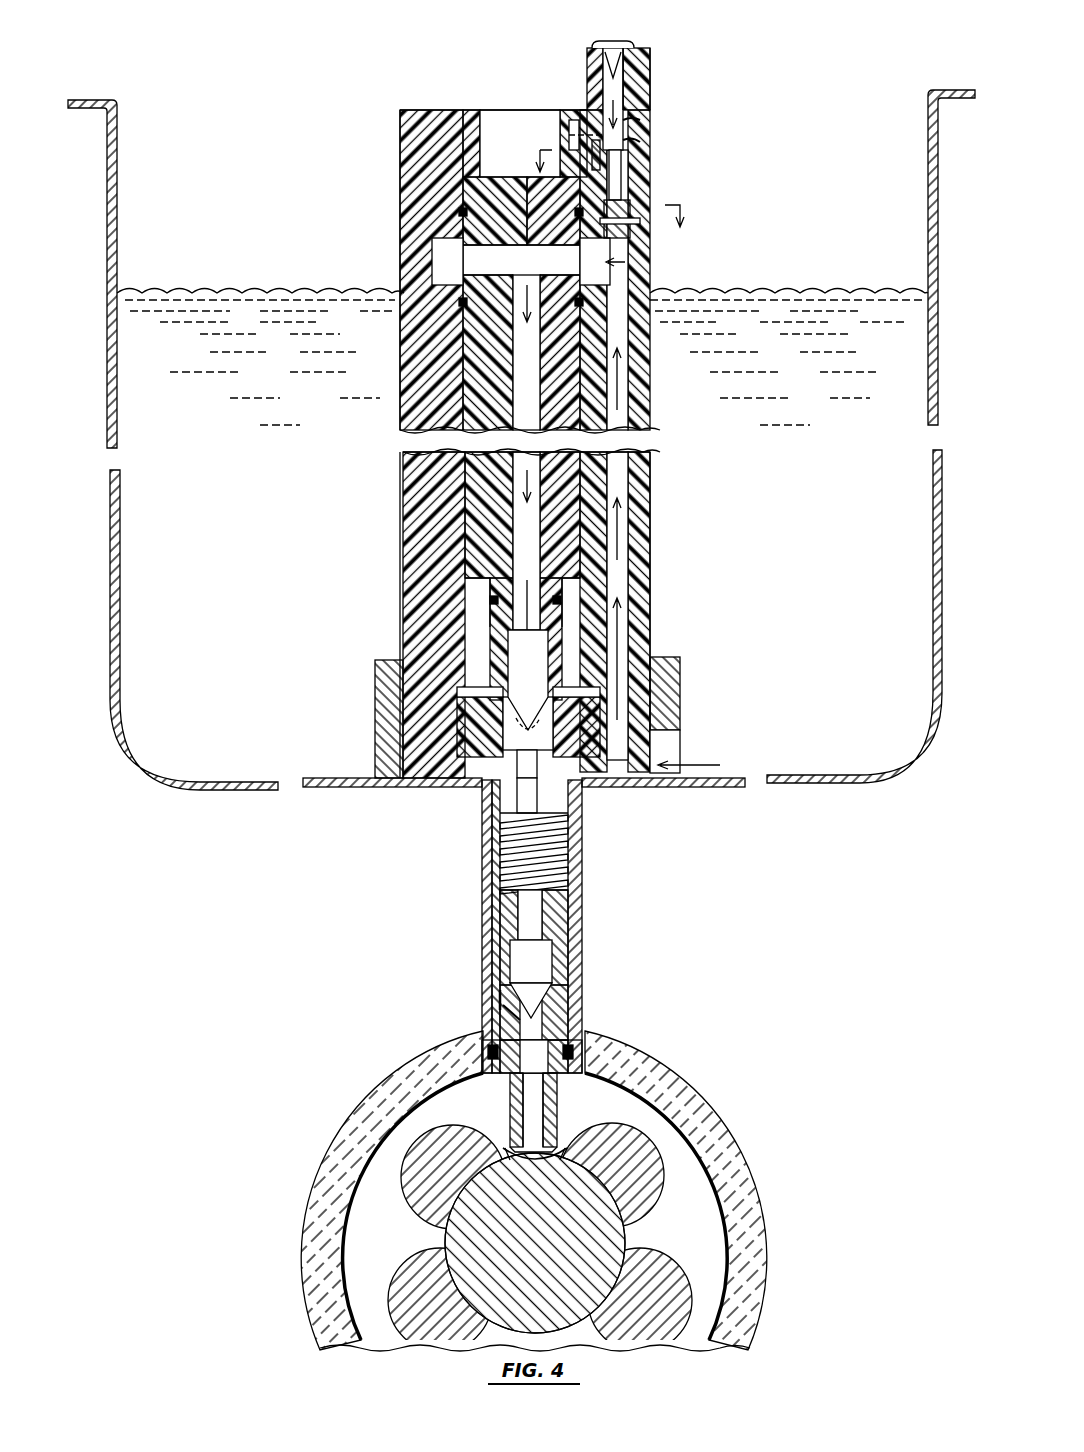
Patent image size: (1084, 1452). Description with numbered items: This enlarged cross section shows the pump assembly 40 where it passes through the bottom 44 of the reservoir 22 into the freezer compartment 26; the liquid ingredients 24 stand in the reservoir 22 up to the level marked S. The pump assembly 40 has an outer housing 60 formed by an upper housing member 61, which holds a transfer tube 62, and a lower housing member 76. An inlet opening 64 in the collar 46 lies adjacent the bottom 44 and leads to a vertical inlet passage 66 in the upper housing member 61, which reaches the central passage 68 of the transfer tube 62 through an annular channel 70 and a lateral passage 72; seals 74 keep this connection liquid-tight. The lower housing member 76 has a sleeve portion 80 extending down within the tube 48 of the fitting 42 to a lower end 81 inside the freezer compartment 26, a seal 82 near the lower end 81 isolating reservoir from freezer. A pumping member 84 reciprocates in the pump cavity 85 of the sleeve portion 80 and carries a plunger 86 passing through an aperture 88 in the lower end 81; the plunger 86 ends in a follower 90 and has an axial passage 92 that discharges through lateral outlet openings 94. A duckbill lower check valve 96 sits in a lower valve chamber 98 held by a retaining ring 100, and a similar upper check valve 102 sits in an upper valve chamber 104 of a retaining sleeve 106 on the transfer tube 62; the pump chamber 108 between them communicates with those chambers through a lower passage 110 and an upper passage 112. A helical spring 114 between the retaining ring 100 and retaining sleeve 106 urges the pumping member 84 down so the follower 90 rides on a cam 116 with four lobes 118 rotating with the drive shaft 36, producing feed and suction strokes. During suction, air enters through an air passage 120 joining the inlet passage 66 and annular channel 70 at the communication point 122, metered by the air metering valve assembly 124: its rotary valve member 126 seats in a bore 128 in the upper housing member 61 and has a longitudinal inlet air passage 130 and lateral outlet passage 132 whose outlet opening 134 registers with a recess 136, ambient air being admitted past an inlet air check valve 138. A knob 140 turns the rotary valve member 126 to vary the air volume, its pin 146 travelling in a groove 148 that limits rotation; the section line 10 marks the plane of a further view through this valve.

The section line 10 is at (623, 188).
The reservoir 22 is at (117, 384).
The liquid ingredients 24 is at (226, 469).
The freezer compartment 26 is at (515, 1189).
The drive shaft 36 is at (519, 1250).
The pump assembly 40 is at (530, 397).
The fitting 42 is at (553, 701).
The bottom of reservoir 44 is at (245, 781).
The collar 46 is at (670, 697).
The tube 48 is at (529, 965).
The outer housing 60 is at (400, 167).
The upper housing member 61 is at (403, 320).
The transfer tube 62 is at (465, 361).
The inlet opening 64 is at (680, 744).
The vertical inlet passage 66 is at (628, 578).
The central passage 68 is at (513, 399).
The annular channel 70 is at (432, 255).
The lateral passage 72 is at (520, 251).
The seals 74 is at (575, 210).
The lower housing member 76 is at (462, 691).
The sleeve portion 80 is at (492, 815).
The lower end 81 is at (510, 1077).
The seal 82 is at (488, 1067).
The pumping member 84 is at (555, 961).
The pump cavity 85 is at (555, 1007).
The plunger 86 is at (600, 1067).
The aperture 88 is at (512, 1102).
The follower 90 is at (512, 1171).
The axially-extending passage 92 is at (548, 1099).
The outlet openings 94 is at (550, 1134).
The lower check valve 96 is at (500, 999).
The lower valve chamber 98 is at (512, 1016).
The retaining ring 100 is at (568, 906).
The upper check valve 102 is at (495, 709).
The upper valve chamber 104 is at (500, 737).
The retaining sleeve 106 is at (472, 645).
The pump chamber 108 is at (560, 835).
The lower passage 110 is at (535, 926).
The upper passage 112 is at (537, 796).
The helical spring 114 is at (568, 861).
The cam 116 is at (668, 1107).
The lobes 118 is at (404, 1179).
The air passage 120 is at (590, 235).
The communication point 122 is at (628, 262).
The air metering valve assembly 124 is at (620, 132).
The rotary valve member 126 is at (641, 141).
The bore 128 is at (641, 119).
The inlet air passage 130 is at (603, 94).
The lateral outlet passage 132 is at (622, 185).
The outlet opening 134 is at (640, 199).
The recess 136 is at (640, 224).
The inlet air check valve 138 is at (606, 43).
The knob 140 is at (650, 79).
The pin 146 is at (575, 134).
The groove 148 is at (600, 151).
The liquid surface S is at (238, 293).